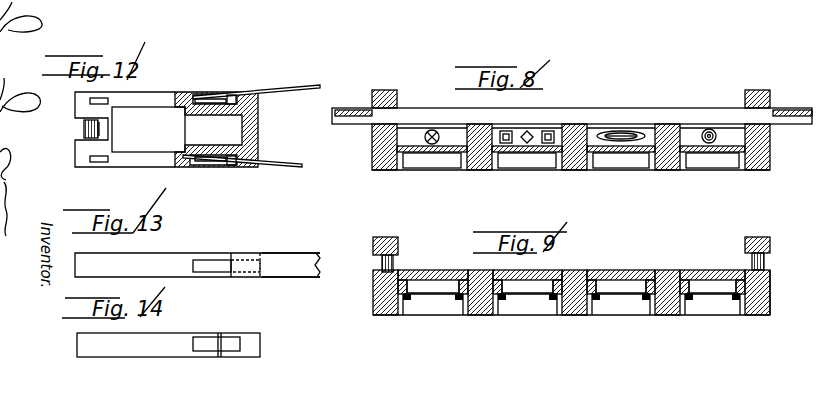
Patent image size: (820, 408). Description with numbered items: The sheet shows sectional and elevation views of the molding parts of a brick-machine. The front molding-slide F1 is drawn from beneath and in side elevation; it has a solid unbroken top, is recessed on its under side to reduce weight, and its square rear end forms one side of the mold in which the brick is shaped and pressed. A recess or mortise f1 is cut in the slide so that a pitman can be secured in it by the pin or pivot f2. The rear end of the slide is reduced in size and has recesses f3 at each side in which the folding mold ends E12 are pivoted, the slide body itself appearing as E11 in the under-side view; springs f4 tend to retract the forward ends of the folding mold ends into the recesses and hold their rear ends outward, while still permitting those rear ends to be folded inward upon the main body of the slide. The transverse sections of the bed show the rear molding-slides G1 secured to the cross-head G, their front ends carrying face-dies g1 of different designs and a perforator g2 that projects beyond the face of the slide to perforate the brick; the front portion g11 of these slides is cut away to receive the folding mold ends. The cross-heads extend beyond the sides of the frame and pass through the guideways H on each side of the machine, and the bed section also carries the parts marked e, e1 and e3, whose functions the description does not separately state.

In FIG. 12, the front molding-slide body E11 is at (130, 141).
In FIG. 12, the folding mold end E12 is at (297, 84).
In FIG. 13, the folding mold end E12 is at (293, 261).
In FIG. 12, the recess or mortise f1 is at (82, 127).
In FIG. 12, the pin or pivot f2 is at (82, 132).
In FIG. 12, the recesses f3 is at (233, 96).
In FIG. 14, the recesses f3 is at (228, 337).
In FIG. 12, the springs f4 is at (215, 97).
In FIG. 13, the front molding-slide F1 is at (79, 268).
In FIG. 14, the front molding-slide F1 is at (86, 343).
In FIG. 8, the glass strip g11 is at (573, 140).
In FIG. 9, the glass strip g11 is at (794, 292).
In FIG. 8, the face-die g1 is at (497, 125).
In FIG. 8, the perforator g2 is at (430, 129).
In FIG. 8, the rear molding-slides G1 is at (693, 130).
In FIG. 8, the cross-bar or cross-head G is at (707, 113).
In FIG. 8, the clamp e3 is at (441, 155).
In FIG. 9, the frame e is at (373, 297).
In FIG. 9, the catch e1 is at (571, 285).
In FIG. 9, the guideways H is at (382, 263).